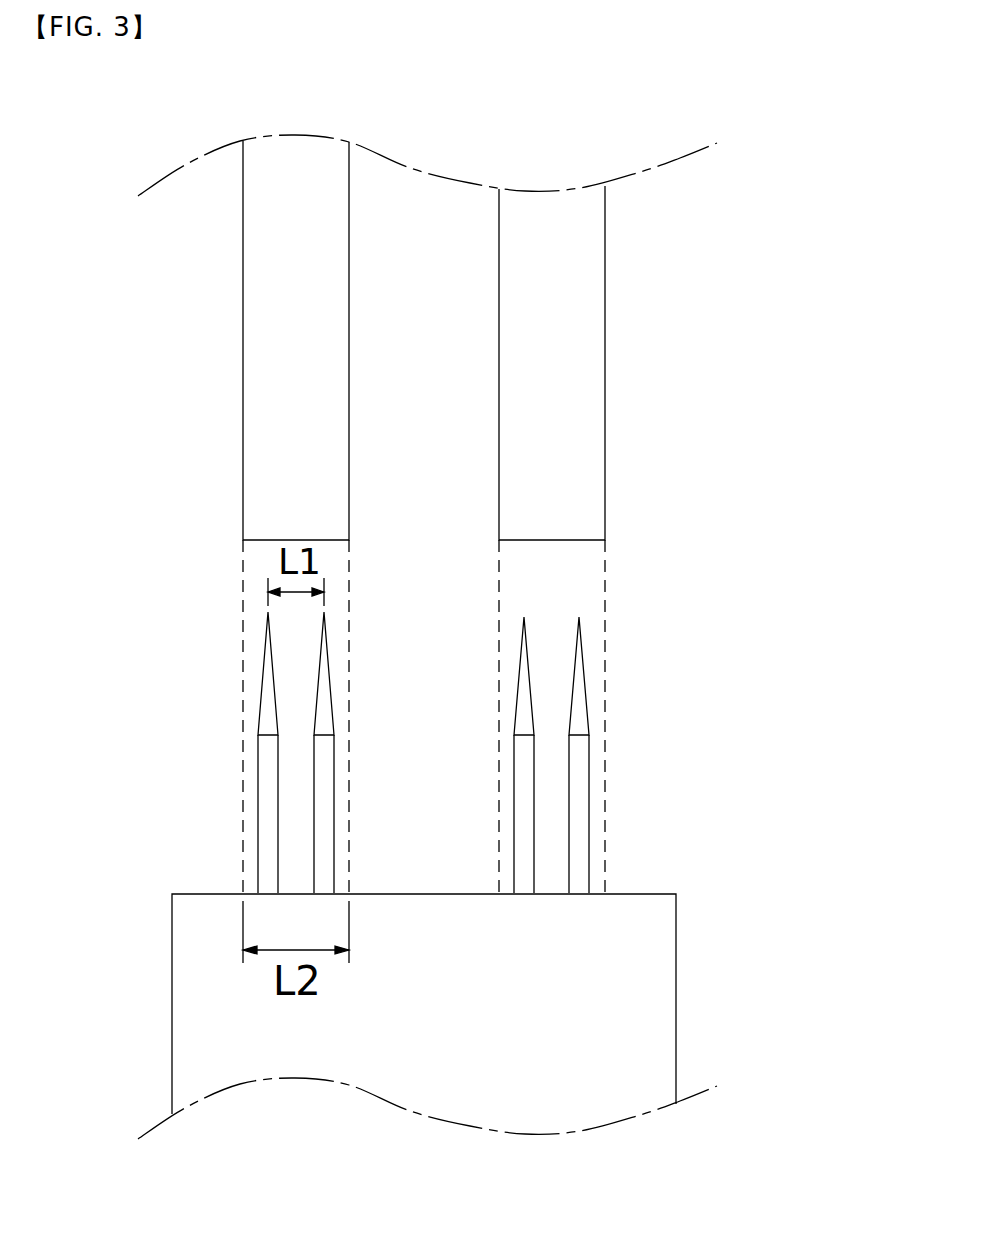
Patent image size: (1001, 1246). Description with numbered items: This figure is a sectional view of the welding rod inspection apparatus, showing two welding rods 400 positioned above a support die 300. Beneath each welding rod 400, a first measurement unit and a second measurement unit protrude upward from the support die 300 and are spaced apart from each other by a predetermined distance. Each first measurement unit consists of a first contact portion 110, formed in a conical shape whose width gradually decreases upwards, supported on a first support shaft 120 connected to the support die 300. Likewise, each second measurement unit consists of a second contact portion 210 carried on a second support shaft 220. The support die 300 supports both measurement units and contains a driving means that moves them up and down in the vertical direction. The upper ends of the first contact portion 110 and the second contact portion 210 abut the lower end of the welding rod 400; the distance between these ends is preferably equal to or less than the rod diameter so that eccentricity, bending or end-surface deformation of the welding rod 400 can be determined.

The first contact portion 110 is at (265, 708).
The first support shaft 120 is at (268, 848).
The second contact portion 210 is at (325, 670).
The second support shaft 220 is at (320, 775).
The support die 300 is at (652, 967).
The welding rod 400 is at (588, 316).